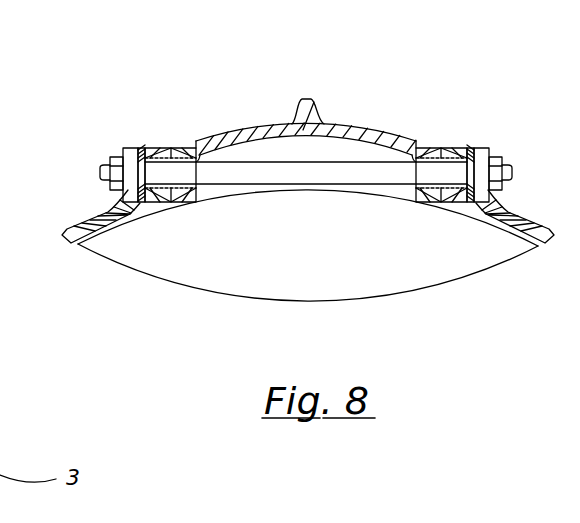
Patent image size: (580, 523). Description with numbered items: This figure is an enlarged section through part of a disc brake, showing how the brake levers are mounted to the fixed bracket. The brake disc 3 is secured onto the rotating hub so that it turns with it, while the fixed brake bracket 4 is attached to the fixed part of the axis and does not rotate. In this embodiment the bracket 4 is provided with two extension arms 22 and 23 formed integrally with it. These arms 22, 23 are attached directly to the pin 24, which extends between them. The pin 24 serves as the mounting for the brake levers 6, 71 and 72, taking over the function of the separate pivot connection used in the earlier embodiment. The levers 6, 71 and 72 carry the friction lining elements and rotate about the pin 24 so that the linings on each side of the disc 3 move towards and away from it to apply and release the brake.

The brake disc 3 is at (410, 278).
The fixed brake bracket 4 is at (78, 226).
The brake lever 6 is at (262, 130).
The brake lever 71 is at (160, 148).
The brake lever 72 is at (455, 147).
The extension arm 22 is at (106, 194).
The extension arm 23 is at (505, 192).
The pin 24 is at (298, 176).